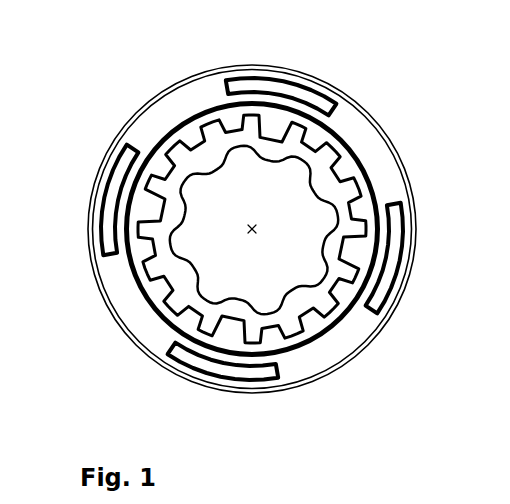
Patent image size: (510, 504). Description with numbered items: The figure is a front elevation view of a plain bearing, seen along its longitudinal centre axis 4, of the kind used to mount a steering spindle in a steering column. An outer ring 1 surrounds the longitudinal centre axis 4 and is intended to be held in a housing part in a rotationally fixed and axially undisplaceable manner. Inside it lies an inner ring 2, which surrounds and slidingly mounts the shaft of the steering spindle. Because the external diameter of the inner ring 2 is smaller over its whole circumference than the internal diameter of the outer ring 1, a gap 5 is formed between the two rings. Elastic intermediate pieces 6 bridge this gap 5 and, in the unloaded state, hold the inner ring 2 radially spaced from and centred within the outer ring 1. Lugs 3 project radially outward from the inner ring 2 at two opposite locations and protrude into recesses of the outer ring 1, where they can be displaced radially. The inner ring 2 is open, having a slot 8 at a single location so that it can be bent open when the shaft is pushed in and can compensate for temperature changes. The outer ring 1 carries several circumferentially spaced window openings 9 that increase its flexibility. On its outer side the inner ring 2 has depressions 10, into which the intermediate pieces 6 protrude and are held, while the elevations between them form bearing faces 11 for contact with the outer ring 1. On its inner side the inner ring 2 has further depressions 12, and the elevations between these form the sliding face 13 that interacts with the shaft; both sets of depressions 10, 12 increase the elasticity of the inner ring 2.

The outer ring 1 is at (372, 332).
The inner ring 2 is at (322, 158).
The lugs 3 is at (354, 166).
The longitudinal centre axis 4 is at (250, 236).
The gap 5 is at (310, 107).
The elastic intermediate pieces 6 is at (276, 117).
The slot 8 is at (162, 245).
The window openings 9 is at (258, 82).
The depressions 10 is at (163, 205).
The bearing faces 11 is at (208, 108).
The depressions 12 is at (313, 278).
The sliding face 13 is at (200, 268).